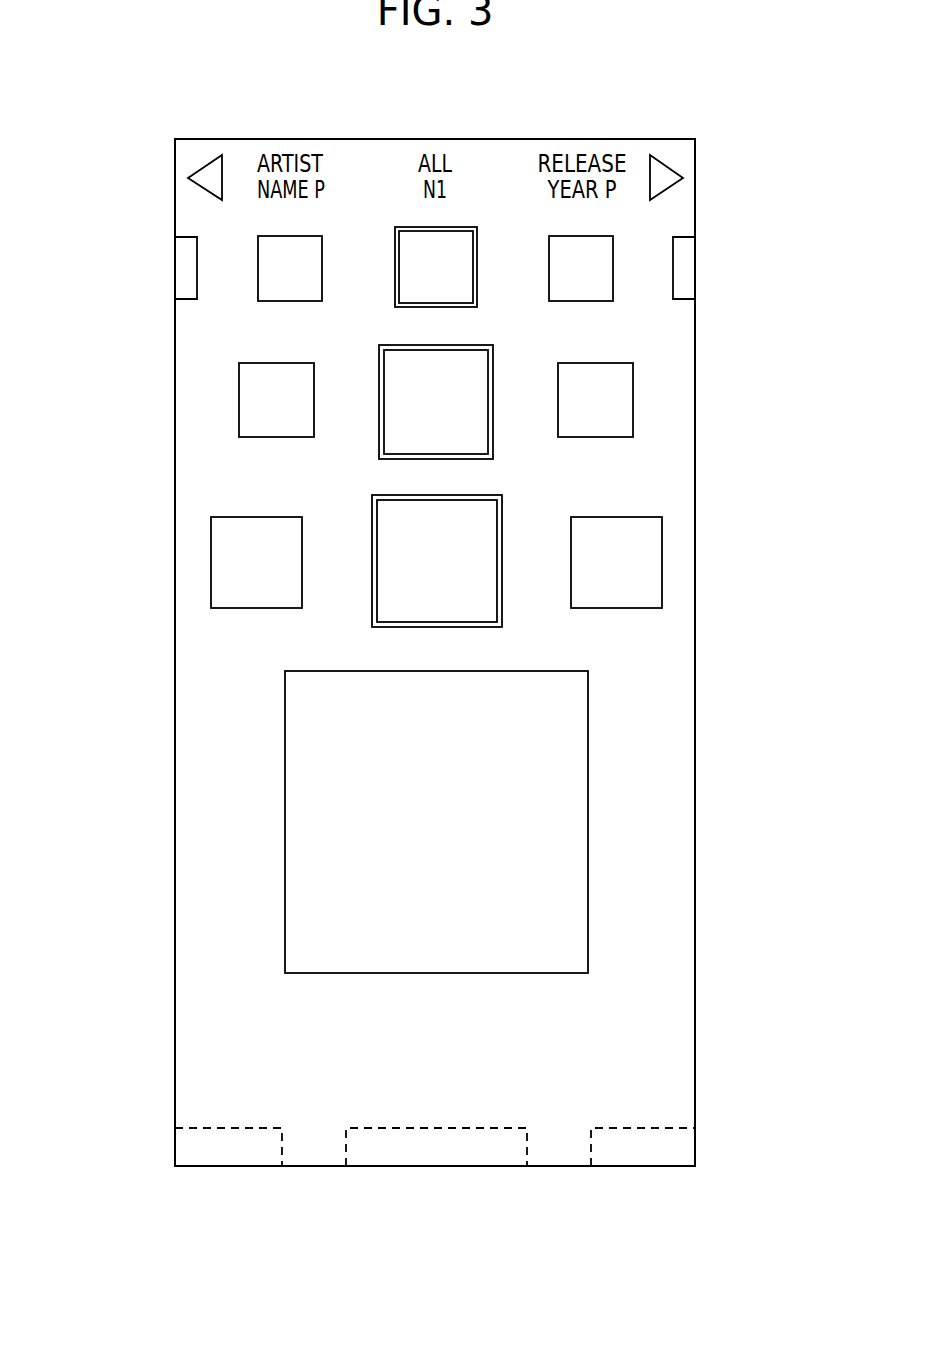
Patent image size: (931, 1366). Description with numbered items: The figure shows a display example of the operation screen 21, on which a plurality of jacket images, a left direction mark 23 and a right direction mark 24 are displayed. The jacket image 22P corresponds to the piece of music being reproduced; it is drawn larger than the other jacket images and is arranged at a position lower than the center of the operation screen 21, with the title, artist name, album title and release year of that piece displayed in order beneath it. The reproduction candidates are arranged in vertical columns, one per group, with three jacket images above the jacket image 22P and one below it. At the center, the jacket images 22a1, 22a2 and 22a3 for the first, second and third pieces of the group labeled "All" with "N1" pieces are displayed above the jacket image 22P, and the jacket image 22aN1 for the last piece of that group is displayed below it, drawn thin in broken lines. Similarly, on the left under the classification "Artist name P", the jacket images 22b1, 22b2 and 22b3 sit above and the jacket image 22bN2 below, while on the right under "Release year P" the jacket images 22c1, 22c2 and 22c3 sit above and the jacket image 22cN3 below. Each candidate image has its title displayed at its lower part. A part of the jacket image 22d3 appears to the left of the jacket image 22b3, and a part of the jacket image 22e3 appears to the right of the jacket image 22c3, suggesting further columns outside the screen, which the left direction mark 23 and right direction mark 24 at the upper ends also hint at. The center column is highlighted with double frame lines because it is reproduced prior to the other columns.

The operation screen 21 is at (175, 773).
The left direction mark 23 is at (203, 168).
The right direction mark 24 is at (666, 164).
The jacket image 22d3 is at (185, 237).
The jacket image 22e3 is at (687, 237).
The jacket image 22b3 is at (258, 292).
The jacket image 22a3 is at (475, 307).
The jacket image 22c3 is at (613, 292).
The jacket image 22b2 is at (239, 398).
The jacket image 22a2 is at (493, 459).
The jacket image 22c2 is at (633, 397).
The jacket image 22b1 is at (211, 560).
The jacket image 22a1 is at (502, 627).
The jacket image 22c1 is at (662, 560).
The jacket image 22P is at (588, 822).
The jacket image 22bN2 is at (222, 1128).
The jacket image 22aN1 is at (522, 1150).
The jacket image 22cN3 is at (652, 1128).